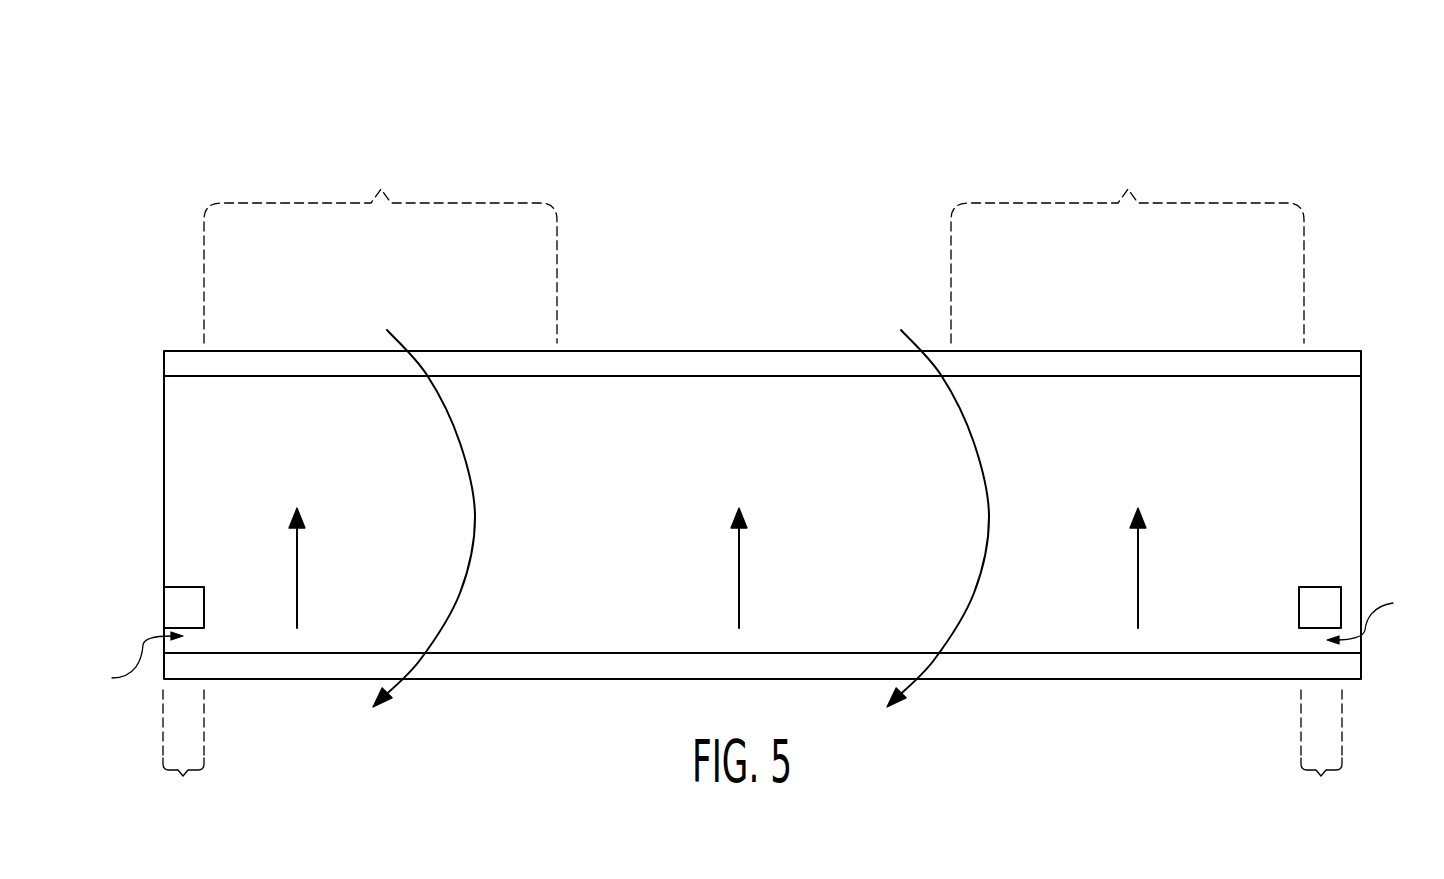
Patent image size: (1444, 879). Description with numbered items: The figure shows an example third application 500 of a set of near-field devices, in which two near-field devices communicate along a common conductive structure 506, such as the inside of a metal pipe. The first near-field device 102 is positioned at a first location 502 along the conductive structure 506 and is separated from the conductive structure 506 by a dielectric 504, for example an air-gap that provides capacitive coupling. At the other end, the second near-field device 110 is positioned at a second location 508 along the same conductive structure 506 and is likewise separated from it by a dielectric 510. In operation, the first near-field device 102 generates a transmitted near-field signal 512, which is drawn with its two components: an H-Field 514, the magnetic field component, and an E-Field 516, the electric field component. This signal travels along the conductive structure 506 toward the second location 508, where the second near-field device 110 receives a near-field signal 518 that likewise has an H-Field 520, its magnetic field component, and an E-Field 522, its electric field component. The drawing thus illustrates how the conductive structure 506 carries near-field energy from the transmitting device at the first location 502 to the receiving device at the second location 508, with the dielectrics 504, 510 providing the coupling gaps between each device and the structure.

The third application 500 is at (152, 117).
The first near-field device 102 is at (195, 587).
The second near-field device 110 is at (1313, 587).
The first location 502 is at (182, 750).
The dielectric 504 is at (123, 667).
The conductive structure 506 is at (740, 348).
The second location 508 is at (1322, 750).
The dielectric 510 is at (1383, 617).
The transmitted near-field signal 512 is at (380, 247).
The H-Field 514 is at (477, 527).
The E-Field 516 is at (298, 550).
The near-field signal 518 is at (1127, 247).
The H-Field 520 is at (982, 457).
The E-Field 522 is at (1139, 568).